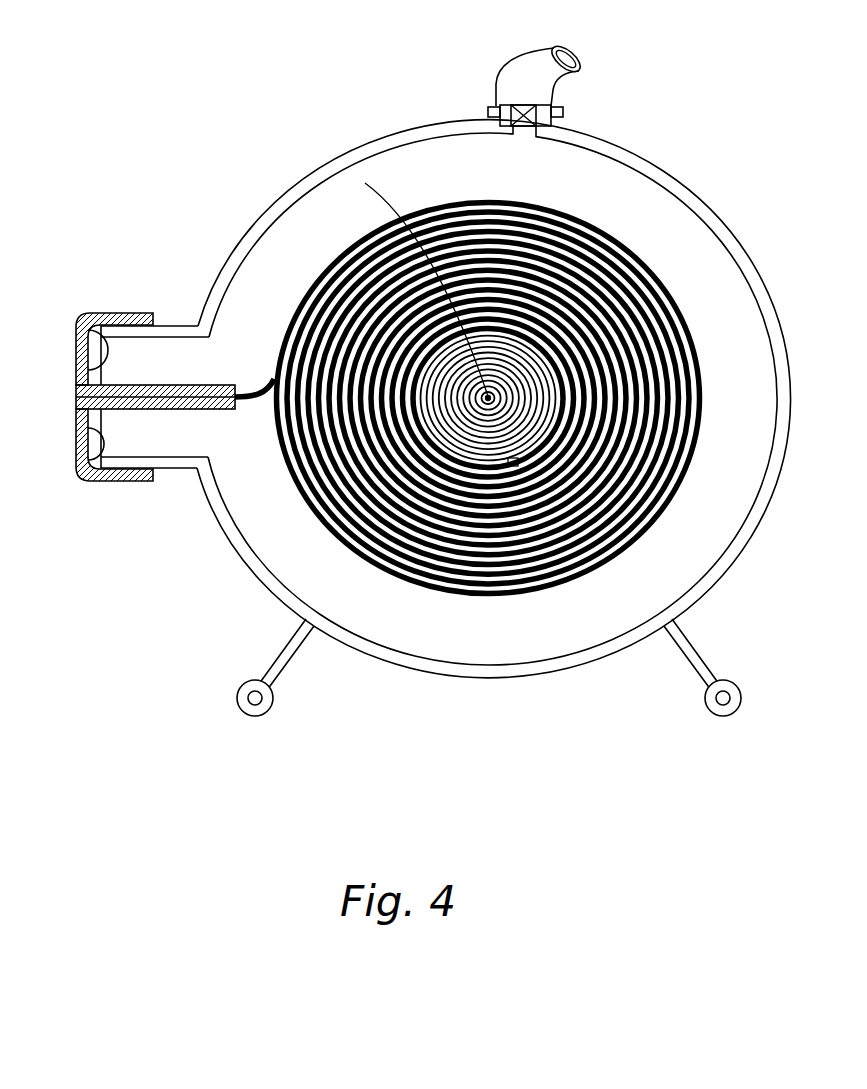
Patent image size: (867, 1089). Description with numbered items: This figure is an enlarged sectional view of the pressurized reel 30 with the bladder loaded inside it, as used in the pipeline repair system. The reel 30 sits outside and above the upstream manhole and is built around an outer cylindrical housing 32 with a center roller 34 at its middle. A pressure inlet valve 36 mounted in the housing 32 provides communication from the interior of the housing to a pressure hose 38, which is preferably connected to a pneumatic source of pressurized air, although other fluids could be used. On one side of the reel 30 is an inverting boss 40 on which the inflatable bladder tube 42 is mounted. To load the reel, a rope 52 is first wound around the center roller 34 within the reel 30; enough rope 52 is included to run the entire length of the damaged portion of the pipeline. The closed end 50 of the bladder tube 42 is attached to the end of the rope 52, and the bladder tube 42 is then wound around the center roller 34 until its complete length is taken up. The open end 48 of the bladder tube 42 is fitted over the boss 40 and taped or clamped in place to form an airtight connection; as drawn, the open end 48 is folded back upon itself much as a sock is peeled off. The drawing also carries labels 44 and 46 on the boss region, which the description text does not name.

The pressurized reel 30 is at (258, 156).
The outer cylindrical housing 32 is at (668, 164).
The center roller 34 is at (411, 285).
The pressure inlet valve 36 is at (515, 97).
The pressure hose 38 is at (573, 62).
The inverting boss 40 is at (173, 316).
The inflatable bladder tube 42 is at (345, 236).
The end cap 44 is at (158, 313).
The tube 46 is at (68, 442).
The open end 48 is at (72, 355).
The closed end 50 is at (508, 458).
The rope 52 is at (463, 463).